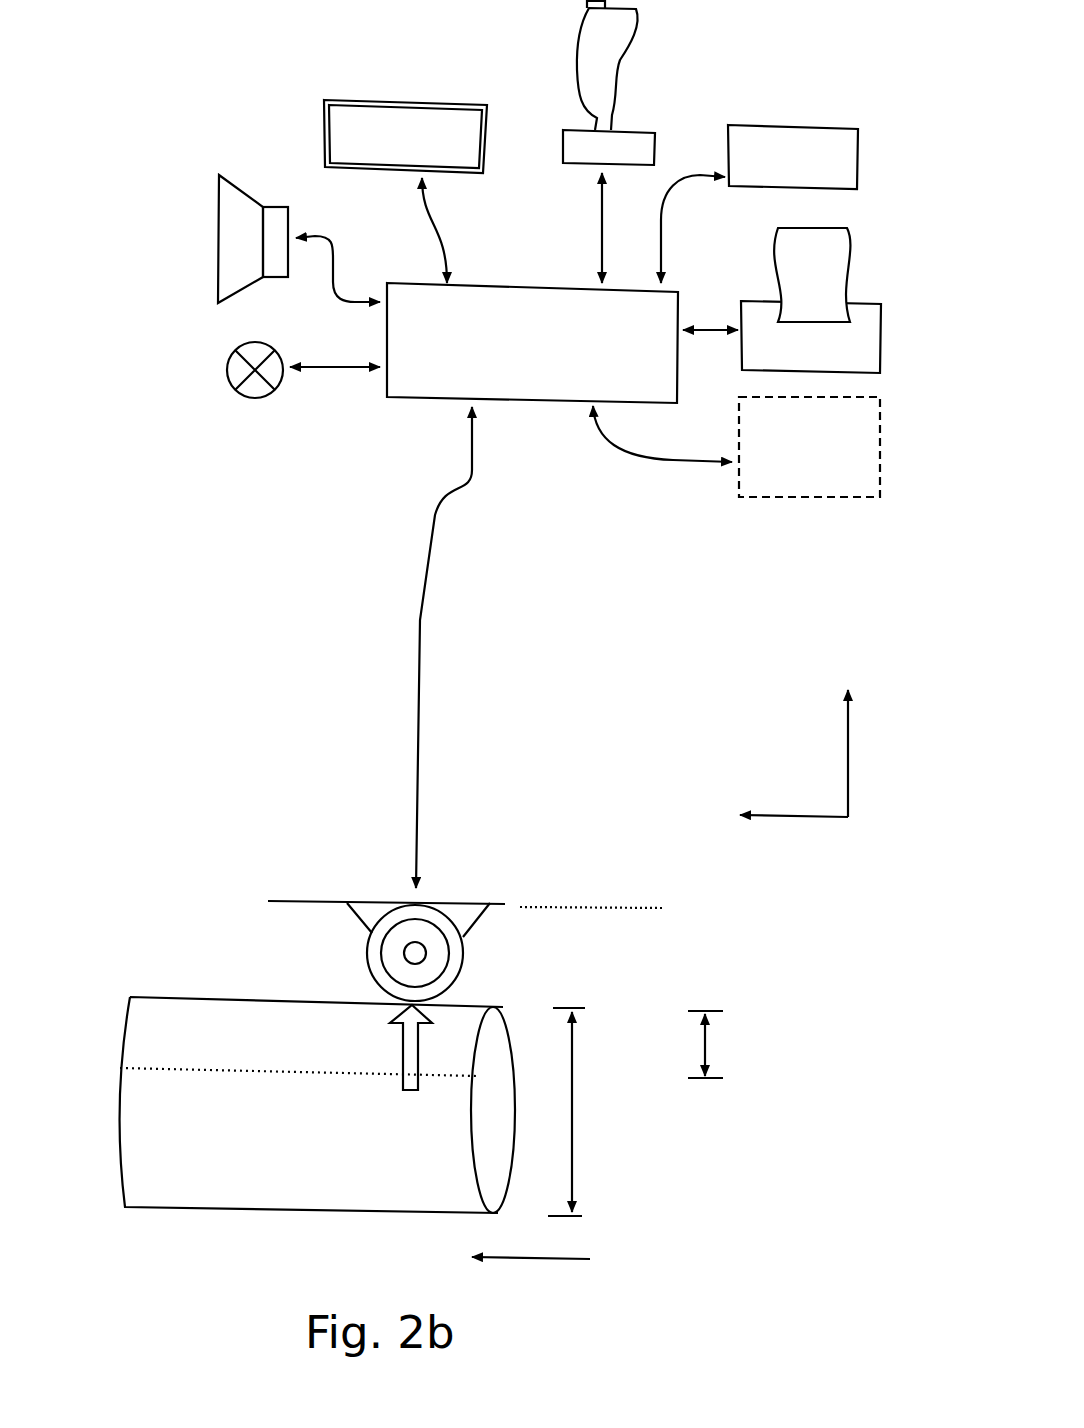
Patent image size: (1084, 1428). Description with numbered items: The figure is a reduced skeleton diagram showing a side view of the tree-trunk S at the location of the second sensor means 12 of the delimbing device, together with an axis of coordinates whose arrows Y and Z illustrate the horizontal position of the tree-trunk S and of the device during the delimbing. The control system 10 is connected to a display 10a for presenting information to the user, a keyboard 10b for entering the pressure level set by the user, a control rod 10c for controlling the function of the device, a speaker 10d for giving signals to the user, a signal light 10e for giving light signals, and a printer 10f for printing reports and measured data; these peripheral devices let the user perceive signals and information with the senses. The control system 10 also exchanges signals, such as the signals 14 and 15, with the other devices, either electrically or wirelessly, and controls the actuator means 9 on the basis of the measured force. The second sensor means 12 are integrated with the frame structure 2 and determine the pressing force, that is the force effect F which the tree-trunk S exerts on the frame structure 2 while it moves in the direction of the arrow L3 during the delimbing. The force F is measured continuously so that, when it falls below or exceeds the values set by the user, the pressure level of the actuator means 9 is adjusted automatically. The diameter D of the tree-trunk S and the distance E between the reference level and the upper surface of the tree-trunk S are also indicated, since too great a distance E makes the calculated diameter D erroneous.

The control system 10 is at (387, 395).
The display 10a is at (487, 153).
The keyboard 10b is at (858, 163).
The control rod 10c is at (657, 158).
The speaker 10d is at (252, 187).
The signal light 10e is at (252, 398).
The printer 10f is at (881, 358).
The actuator means 9 is at (830, 497).
The signal 15 is at (673, 460).
The signal 14 is at (420, 615).
The second sensor means 12 is at (350, 947).
The frame structure 2 is at (357, 903).
The tree-trunk S is at (226, 1058).
The force effect F is at (415, 1062).
The diameter D is at (573, 1100).
The distance E is at (708, 1042).
The arrow indicating movement of the tree-trunk L3 is at (525, 1260).
The axis of coordinates Z is at (845, 750).
The arrow indicating horizontal direction Y is at (800, 818).